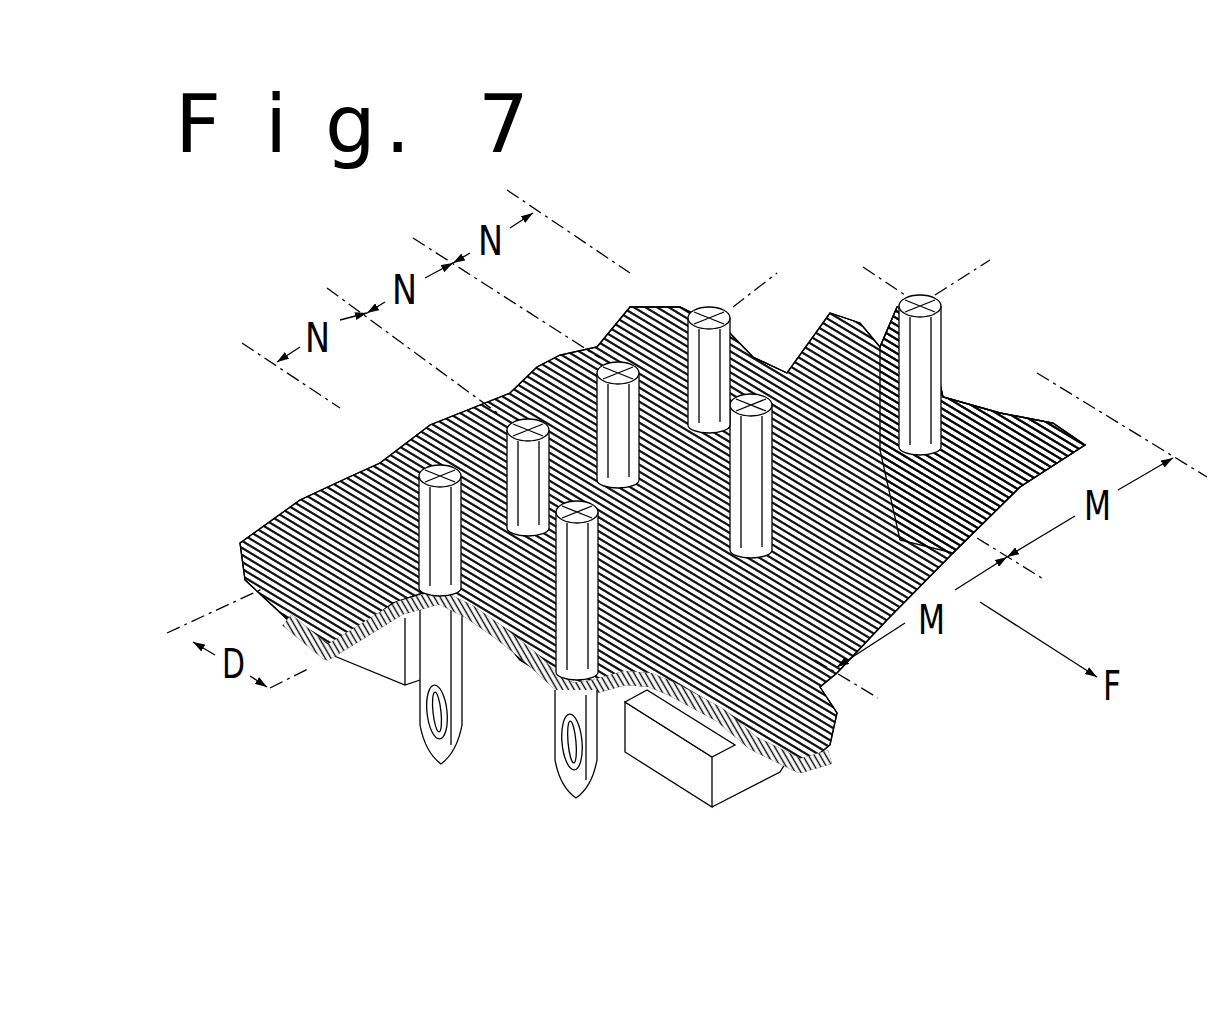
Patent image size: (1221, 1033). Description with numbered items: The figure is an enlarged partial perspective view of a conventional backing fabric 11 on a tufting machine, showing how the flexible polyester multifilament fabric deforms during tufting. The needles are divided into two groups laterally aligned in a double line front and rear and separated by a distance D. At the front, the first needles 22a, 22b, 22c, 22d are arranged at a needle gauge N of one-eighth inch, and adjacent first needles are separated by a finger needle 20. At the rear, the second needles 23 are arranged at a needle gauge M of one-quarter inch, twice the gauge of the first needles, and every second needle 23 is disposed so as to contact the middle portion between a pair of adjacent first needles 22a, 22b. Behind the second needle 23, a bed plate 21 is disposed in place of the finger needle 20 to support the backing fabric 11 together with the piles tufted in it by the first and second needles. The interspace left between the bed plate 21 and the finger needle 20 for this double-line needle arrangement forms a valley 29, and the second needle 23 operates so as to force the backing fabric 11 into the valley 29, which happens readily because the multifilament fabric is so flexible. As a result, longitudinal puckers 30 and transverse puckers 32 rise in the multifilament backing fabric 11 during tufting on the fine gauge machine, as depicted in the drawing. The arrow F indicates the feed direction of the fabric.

The backing fabric 11 is at (845, 741).
The finger needle 20 is at (389, 646).
The bed plate 21 is at (728, 775).
The first needle 22a is at (409, 461).
The first needle 22b is at (511, 397).
The first needle 22c is at (599, 354).
The first needle 22d is at (707, 307).
The second needle 23 is at (916, 295).
The valley 29 is at (514, 684).
The longitudinal puckers 30 is at (300, 502).
The transverse puckers 32 is at (990, 391).